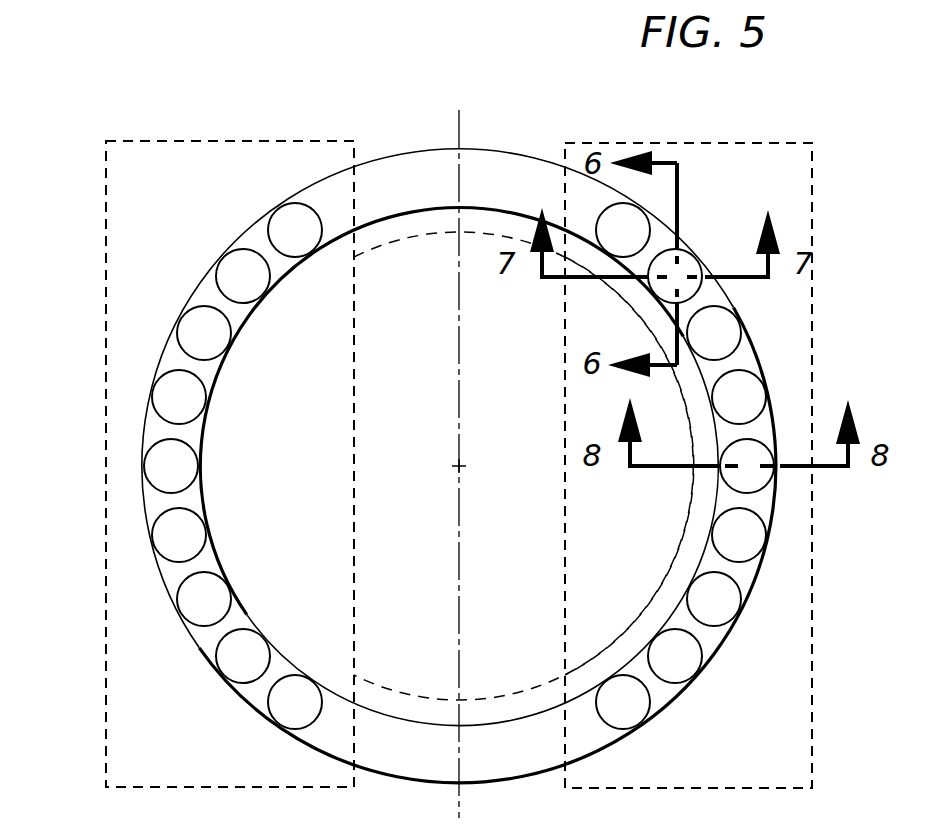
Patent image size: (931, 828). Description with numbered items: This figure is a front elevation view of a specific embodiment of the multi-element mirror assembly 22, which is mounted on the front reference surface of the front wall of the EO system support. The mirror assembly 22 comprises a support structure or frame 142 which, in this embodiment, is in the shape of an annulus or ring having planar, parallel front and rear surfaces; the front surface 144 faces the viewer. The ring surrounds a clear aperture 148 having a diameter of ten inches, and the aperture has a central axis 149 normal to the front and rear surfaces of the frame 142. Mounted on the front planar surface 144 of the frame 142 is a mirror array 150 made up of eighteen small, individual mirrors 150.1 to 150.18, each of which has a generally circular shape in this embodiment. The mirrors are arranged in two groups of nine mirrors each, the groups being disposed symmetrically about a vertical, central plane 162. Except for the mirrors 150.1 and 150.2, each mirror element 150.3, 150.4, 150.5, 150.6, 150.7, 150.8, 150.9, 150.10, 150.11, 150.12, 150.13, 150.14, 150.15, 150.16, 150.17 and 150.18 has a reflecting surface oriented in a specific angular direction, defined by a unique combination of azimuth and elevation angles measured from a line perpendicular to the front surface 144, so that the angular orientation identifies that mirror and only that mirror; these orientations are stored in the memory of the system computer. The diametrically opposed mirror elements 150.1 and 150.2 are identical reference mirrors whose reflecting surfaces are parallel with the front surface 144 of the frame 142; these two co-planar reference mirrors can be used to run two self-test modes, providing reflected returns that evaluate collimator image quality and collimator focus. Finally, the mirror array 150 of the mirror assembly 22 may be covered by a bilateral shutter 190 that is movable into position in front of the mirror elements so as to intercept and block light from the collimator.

The multi-element mirror assembly 22 is at (323, 75).
The frame 142 is at (527, 157).
The front surface 144 is at (408, 180).
The clear aperture 148 is at (373, 405).
The central axis 149 is at (456, 468).
The mirror array 150 is at (303, 140).
The reference mirror element 150.1 is at (154, 443).
The reference mirror element 150.2 is at (772, 482).
The mirror element 150.3 is at (168, 370).
The mirror element 150.4 is at (200, 303).
The mirror element 150.5 is at (245, 247).
The mirror element 150.6 is at (302, 202).
The mirror element 150.7 is at (750, 372).
The mirror element 150.8 is at (741, 345).
The mirror element 150.9 is at (683, 249).
The mirror element 150.10 is at (640, 207).
The mirror element 150.11 is at (156, 517).
The mirror element 150.12 is at (178, 585).
The mirror element 150.13 is at (238, 684).
The mirror element 150.14 is at (297, 728).
The mirror element 150.15 is at (763, 520).
The mirror element 150.16 is at (742, 592).
The mirror element 150.17 is at (680, 684).
The mirror element 150.18 is at (620, 731).
The vertical central plane 162 is at (463, 123).
The bilateral shutter 190 is at (130, 140).